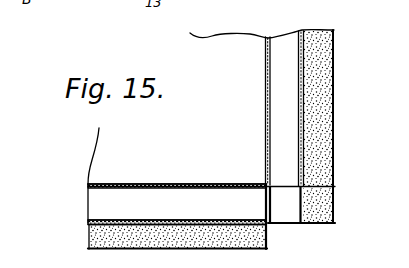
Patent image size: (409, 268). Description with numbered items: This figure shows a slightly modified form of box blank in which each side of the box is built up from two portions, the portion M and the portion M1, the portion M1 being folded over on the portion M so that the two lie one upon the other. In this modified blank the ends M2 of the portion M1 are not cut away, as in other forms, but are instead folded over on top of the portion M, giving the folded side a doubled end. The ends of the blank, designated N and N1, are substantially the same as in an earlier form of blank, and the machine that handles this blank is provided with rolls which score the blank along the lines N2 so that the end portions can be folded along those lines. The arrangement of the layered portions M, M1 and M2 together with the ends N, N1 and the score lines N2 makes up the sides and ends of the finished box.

The side portion M is at (285, 42).
The side portion M1 is at (322, 66).
The ends of side portion M2 is at (320, 215).
The end N is at (100, 194).
The end N1 is at (87, 228).
The score lines N2 is at (189, 222).